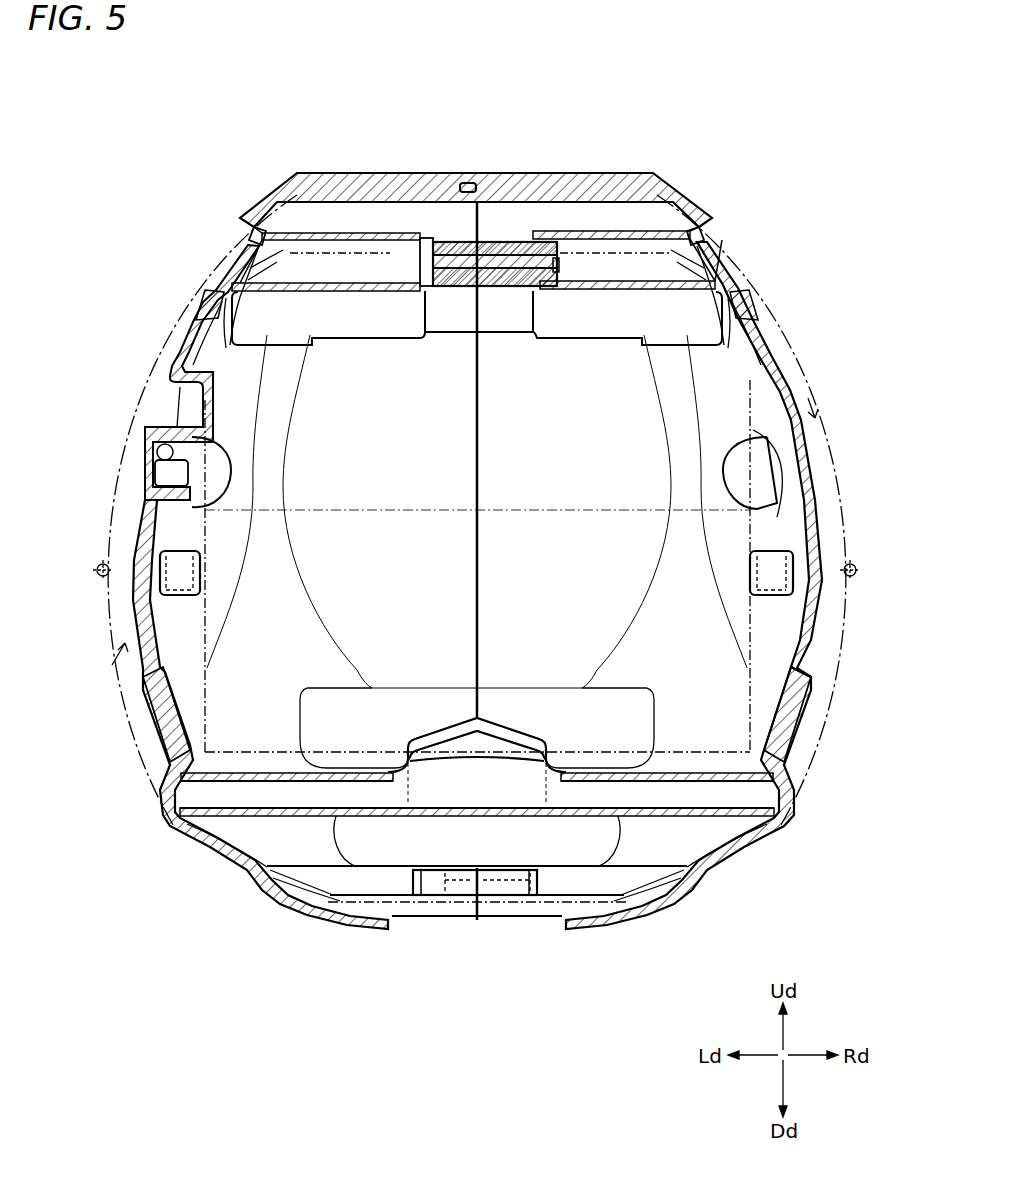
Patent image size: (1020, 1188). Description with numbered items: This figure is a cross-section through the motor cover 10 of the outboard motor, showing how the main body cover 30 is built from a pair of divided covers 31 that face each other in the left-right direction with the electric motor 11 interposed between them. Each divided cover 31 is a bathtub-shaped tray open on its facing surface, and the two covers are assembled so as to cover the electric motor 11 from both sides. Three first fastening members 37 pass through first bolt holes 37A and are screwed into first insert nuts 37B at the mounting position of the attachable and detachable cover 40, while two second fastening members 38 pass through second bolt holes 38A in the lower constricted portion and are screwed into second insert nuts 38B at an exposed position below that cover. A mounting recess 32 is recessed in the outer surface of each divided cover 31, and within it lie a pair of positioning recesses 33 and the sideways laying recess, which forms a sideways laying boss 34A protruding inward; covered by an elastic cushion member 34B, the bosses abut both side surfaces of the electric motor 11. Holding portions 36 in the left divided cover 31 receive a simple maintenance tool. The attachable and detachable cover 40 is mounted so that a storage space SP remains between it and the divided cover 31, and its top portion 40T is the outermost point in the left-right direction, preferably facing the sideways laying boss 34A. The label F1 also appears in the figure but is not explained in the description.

The motor cover 10 is at (238, 118).
The electric motor 11 is at (447, 508).
The main body cover 30 is at (322, 147).
The divided cover 31 is at (290, 177).
The mounting recess 32 is at (185, 322).
The positioning recess 33 is at (228, 482).
The sideways laying boss 34A is at (160, 580).
The cushion member 34B is at (195, 600).
The holding portion 36 is at (188, 410).
The first fastening member 37 is at (493, 211).
The first bolt hole 37A is at (540, 270).
The first insert nut 37B is at (447, 243).
The second fastening member 38 is at (477, 923).
The second bolt hole 38A is at (533, 897).
The second insert nut 38B is at (455, 900).
The attachable and detachable cover 40 is at (130, 440).
The top portion 40T is at (96, 566).
The flange F1 is at (222, 265).
The storage space SP is at (118, 662).